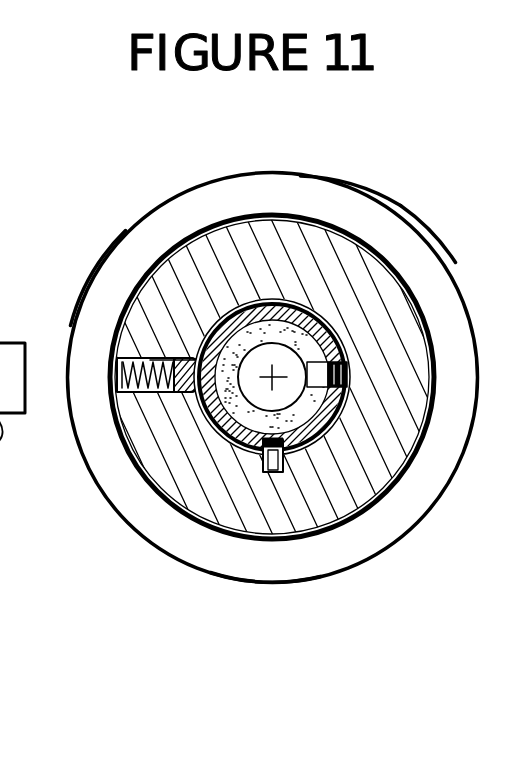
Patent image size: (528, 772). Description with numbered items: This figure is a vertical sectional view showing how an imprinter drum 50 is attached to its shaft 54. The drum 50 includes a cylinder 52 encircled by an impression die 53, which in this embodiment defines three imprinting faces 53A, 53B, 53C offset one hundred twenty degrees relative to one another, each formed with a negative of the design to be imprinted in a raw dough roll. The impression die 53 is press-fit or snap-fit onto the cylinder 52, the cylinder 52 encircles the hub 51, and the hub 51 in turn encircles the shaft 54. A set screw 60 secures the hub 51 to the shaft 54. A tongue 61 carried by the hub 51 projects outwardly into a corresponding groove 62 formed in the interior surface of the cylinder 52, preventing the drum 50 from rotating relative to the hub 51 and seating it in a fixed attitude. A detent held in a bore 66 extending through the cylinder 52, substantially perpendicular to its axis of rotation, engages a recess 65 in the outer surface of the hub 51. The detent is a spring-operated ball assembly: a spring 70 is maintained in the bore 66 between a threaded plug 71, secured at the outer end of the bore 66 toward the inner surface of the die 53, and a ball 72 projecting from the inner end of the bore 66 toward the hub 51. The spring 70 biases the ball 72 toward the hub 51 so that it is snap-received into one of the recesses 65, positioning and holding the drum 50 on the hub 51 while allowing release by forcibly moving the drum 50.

The drum 50 is at (368, 190).
The hub 51 is at (272, 297).
The cylinder 52 is at (223, 517).
The impression die 53 is at (432, 282).
The imprinting face 53A is at (441, 227).
The imprinting face 53B is at (277, 602).
The imprinting face 53C is at (78, 260).
The shaft 54 is at (215, 435).
The set screw 60 is at (347, 377).
The tongue 61 is at (275, 455).
The groove 62 is at (283, 452).
The recess 65 is at (257, 388).
The bore 66 is at (157, 360).
The spring 70 is at (187, 392).
The threaded plug 71 is at (120, 392).
The ball 72 is at (188, 357).